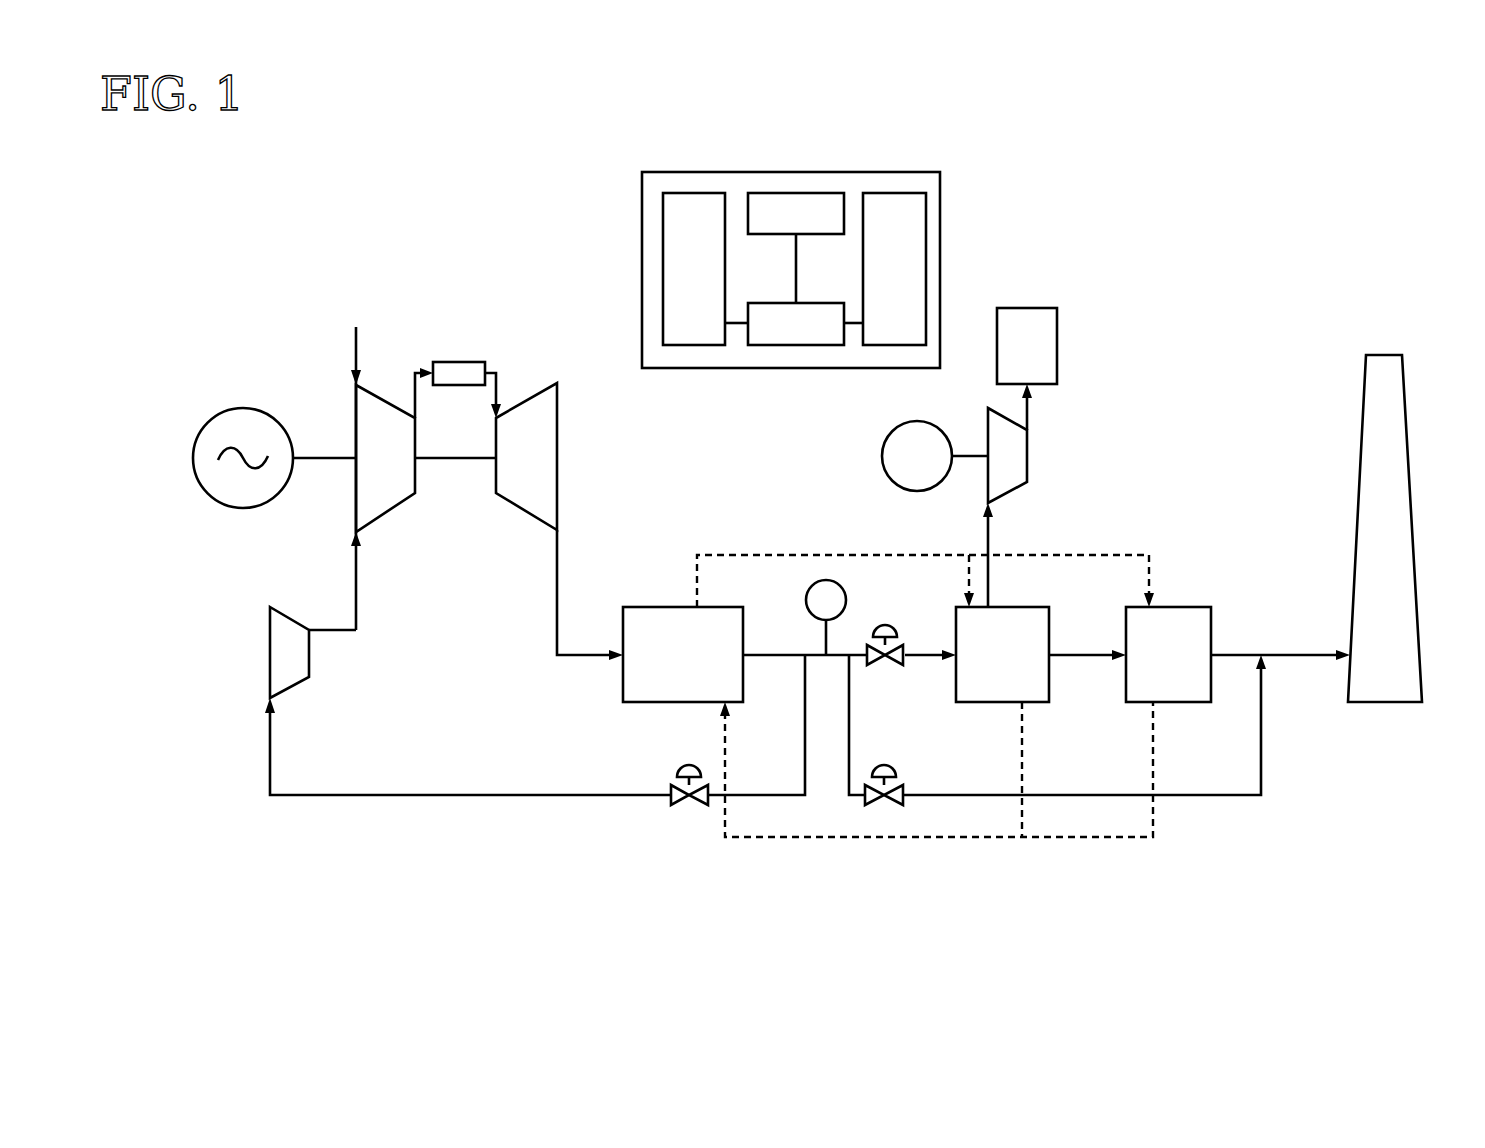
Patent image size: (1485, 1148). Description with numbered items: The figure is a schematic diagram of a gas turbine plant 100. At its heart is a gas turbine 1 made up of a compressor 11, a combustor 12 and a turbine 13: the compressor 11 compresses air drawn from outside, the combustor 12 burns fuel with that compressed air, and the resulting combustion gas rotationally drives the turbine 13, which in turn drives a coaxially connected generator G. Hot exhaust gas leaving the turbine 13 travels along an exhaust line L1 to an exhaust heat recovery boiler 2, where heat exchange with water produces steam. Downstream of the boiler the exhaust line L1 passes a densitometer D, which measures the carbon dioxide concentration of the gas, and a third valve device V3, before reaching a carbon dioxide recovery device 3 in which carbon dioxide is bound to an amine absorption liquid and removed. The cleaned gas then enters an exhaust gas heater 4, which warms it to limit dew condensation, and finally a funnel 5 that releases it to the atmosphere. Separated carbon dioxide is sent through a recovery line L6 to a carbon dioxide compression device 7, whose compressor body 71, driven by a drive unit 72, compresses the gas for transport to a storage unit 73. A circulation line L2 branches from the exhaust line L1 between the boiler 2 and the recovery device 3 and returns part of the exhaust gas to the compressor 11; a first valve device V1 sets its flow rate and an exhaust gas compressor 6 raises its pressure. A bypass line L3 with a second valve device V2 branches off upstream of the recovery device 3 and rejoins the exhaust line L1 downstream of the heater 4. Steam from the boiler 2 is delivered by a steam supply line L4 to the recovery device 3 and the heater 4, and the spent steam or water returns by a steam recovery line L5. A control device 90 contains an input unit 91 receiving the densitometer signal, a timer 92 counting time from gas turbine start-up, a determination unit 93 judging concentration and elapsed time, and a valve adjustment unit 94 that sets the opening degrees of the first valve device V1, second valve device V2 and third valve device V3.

The gas turbine plant 100 is at (168, 312).
The gas turbine 1 is at (500, 282).
The generator G is at (243, 408).
The compressor 11 is at (388, 396).
The combustor 12 is at (460, 362).
The turbine 13 is at (541, 392).
The exhaust gas compressor 6 is at (270, 655).
The exhaust line L1 is at (557, 590).
The circulation line L2 is at (356, 797).
The bypass line L3 is at (990, 800).
The steam supply line L4 is at (782, 553).
The steam recovery line L5 is at (825, 840).
The recovery line L6 is at (986, 530).
The first valve device V1 is at (693, 806).
The second valve device V2 is at (888, 806).
The third valve device V3 is at (904, 668).
The exhaust heat recovery boiler 2 is at (671, 595).
The densitometer D is at (806, 600).
The carbon dioxide recovery device 3 is at (1058, 598).
The exhaust gas heater 4 is at (1209, 598).
The funnel 5 is at (1405, 457).
The carbon dioxide compression device 7 is at (1176, 402).
The compressor body 71 is at (1027, 456).
The drive unit 72 is at (882, 456).
The storage unit 73 is at (1057, 349).
The control device 90 is at (940, 178).
The input unit 91 is at (663, 240).
The timer 92 is at (810, 193).
The determination unit 93 is at (782, 345).
The valve adjustment unit 94 is at (912, 235).